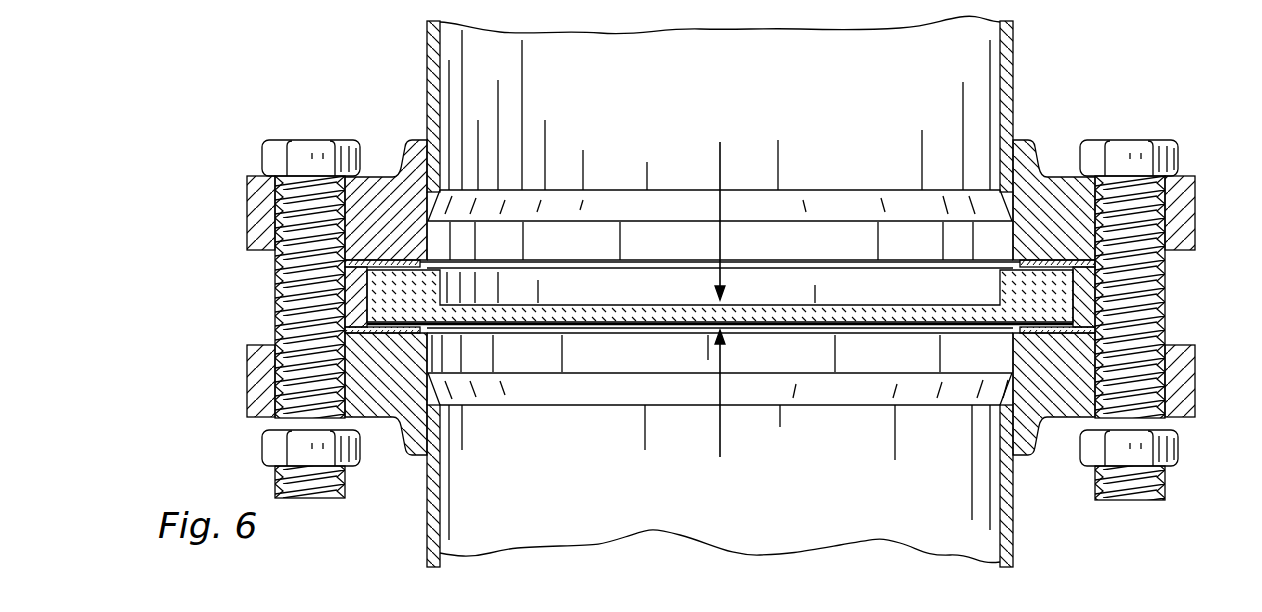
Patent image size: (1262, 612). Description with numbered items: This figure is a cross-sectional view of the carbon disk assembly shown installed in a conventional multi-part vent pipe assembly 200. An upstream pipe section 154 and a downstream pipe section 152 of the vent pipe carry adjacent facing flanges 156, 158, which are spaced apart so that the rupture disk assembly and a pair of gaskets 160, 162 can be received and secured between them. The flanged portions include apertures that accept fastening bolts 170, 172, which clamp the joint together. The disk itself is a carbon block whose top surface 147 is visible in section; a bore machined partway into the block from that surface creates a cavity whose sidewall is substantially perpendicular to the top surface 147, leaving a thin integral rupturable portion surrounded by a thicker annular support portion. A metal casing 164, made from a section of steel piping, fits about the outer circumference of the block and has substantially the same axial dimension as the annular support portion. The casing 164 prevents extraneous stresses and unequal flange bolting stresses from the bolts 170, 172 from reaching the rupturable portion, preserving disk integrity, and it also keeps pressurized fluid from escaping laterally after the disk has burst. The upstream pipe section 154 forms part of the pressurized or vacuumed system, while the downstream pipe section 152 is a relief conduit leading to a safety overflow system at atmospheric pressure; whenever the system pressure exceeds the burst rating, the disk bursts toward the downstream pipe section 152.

The vent pipe assembly 200 is at (394, 49).
The top surface 147 is at (805, 310).
The downstream pipe section 152 is at (1015, 73).
The upstream pipe section 154 is at (1013, 517).
The flange 156 is at (1040, 140).
The flange 158 is at (1040, 458).
The gasket 160 is at (393, 257).
The gasket 162 is at (380, 335).
The metal casing 164 is at (357, 292).
The fastening bolt 170 is at (1172, 155).
The fastening bolt 172 is at (272, 156).